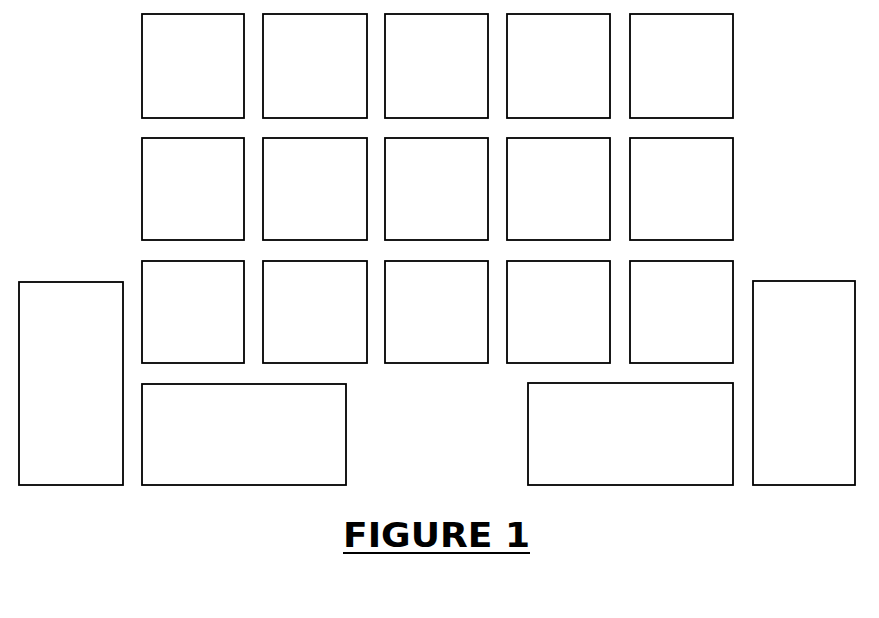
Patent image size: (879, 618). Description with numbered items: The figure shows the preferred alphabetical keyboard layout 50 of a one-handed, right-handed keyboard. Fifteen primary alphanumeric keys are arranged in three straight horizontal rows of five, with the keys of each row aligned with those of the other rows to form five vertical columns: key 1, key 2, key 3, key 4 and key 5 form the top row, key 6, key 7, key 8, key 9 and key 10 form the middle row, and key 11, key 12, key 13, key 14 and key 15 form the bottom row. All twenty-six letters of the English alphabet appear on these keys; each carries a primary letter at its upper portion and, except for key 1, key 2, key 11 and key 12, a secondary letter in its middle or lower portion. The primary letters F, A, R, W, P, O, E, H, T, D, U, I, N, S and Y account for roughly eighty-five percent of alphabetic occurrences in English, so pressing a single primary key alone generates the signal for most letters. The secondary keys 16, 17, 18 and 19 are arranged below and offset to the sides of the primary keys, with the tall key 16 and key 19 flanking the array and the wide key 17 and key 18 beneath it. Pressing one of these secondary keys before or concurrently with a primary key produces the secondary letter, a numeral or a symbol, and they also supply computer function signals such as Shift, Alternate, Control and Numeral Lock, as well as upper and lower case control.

The primary alphanumeric key 1 is at (180, 53).
The primary alphanumeric key 2 is at (301, 53).
The primary alphanumeric key 3 is at (422, 53).
The primary alphanumeric key 4 is at (546, 53).
The primary alphanumeric key 5 is at (667, 53).
The primary alphanumeric key 6 is at (180, 175).
The primary alphanumeric key 7 is at (301, 175).
The primary alphanumeric key 8 is at (422, 175).
The primary alphanumeric key 9 is at (544, 175).
The primary alphanumeric key 10 is at (680, 175).
The primary alphanumeric key 11 is at (190, 298).
The primary alphanumeric key 12 is at (312, 298).
The primary alphanumeric key 13 is at (433, 298).
The primary alphanumeric key 14 is at (555, 298).
The primary alphanumeric key 15 is at (678, 298).
The secondary key 16 is at (68, 319).
The secondary key 17 is at (190, 421).
The secondary key 18 is at (577, 421).
The secondary key 19 is at (802, 321).
The alphabetical keyboard layout 50 is at (158, 534).